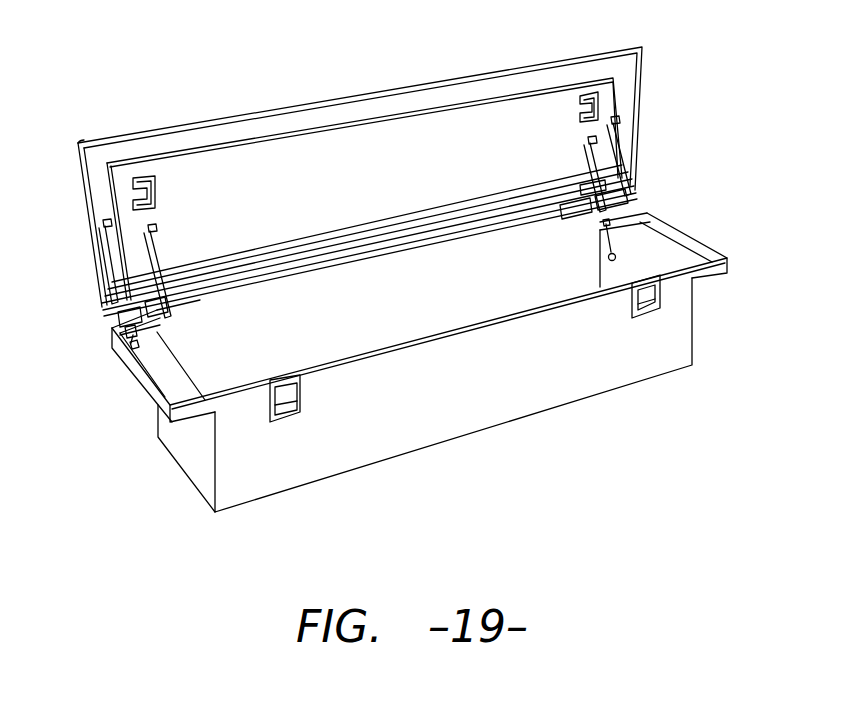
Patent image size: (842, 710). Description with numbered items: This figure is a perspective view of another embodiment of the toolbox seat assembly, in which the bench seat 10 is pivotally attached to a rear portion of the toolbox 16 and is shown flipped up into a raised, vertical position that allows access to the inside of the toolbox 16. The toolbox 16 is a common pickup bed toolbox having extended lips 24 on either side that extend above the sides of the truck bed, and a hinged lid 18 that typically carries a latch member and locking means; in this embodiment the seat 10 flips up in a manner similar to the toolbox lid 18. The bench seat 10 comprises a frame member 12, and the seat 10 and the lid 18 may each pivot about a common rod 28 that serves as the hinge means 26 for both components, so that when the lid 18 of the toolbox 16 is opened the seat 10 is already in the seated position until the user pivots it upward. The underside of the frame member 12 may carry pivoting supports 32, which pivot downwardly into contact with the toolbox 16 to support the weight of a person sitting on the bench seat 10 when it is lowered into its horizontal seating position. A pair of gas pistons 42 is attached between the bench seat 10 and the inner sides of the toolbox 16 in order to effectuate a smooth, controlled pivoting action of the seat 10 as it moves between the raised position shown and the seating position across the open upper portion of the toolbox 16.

The bench seat 10 is at (292, 156).
The frame member 12 is at (463, 123).
The toolbox 16 is at (600, 372).
The hinged lid 18 is at (367, 110).
The extended lips 24 is at (152, 388).
The hinge means 26 is at (150, 355).
The common rod 28 is at (468, 237).
The pivoting supports 32 is at (157, 190).
The gas pistons 42 is at (152, 250).